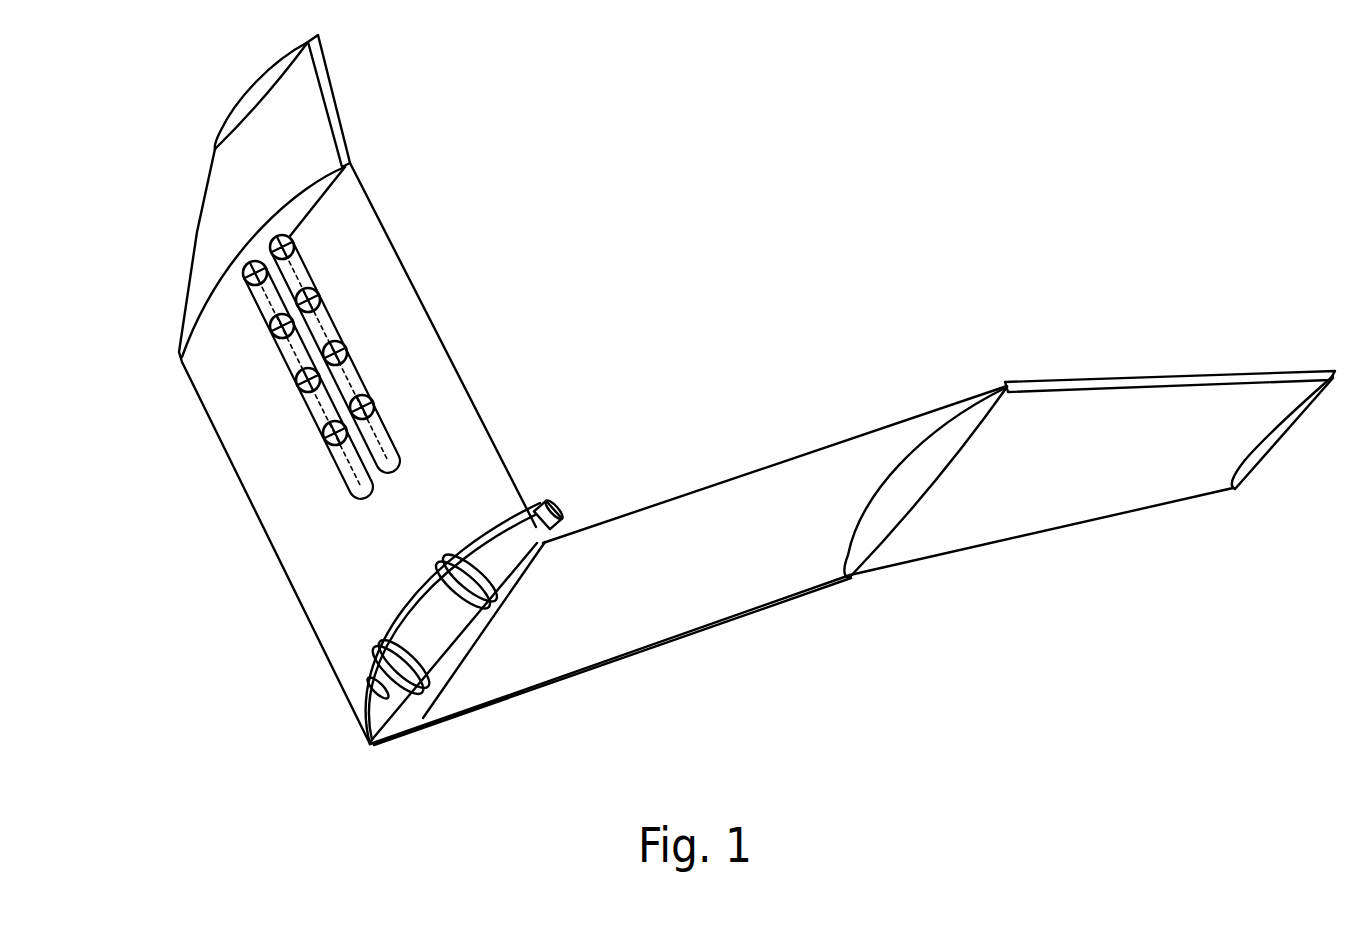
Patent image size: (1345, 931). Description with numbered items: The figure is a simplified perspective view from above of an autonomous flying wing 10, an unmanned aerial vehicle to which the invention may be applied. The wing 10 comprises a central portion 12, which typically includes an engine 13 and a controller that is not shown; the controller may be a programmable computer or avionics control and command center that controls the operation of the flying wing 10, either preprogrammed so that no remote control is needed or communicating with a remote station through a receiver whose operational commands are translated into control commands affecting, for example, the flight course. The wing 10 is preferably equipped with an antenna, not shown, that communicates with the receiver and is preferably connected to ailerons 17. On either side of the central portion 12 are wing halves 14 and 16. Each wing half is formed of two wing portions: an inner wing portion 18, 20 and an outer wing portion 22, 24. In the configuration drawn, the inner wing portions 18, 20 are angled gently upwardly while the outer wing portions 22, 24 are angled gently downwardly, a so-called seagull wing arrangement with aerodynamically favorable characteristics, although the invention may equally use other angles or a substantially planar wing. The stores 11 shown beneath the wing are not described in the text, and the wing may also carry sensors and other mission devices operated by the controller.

The flying wing 10 is at (458, 746).
The weapons stores 11 is at (398, 491).
The central portion 12 is at (474, 518).
The engine 13 is at (543, 543).
The wing half 14 is at (855, 598).
The wing half 16 is at (375, 150).
The ailerons 17 is at (328, 60).
The inner wing portion 18 is at (742, 487).
The inner wing portion 20 is at (437, 318).
The outer wing portion 22 is at (1140, 402).
The outer wing portion 24 is at (307, 108).